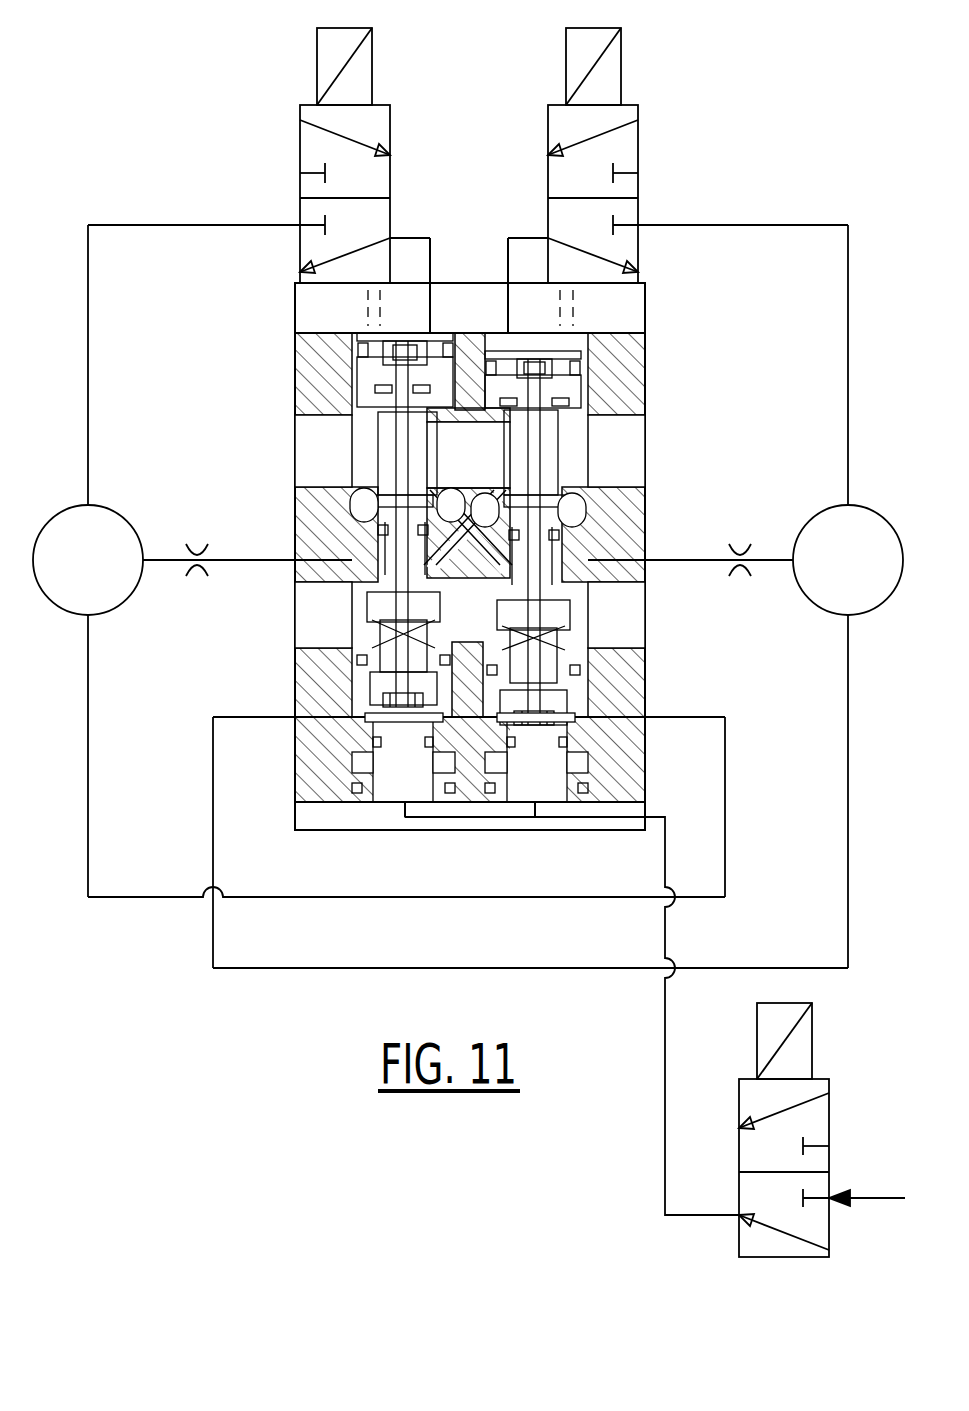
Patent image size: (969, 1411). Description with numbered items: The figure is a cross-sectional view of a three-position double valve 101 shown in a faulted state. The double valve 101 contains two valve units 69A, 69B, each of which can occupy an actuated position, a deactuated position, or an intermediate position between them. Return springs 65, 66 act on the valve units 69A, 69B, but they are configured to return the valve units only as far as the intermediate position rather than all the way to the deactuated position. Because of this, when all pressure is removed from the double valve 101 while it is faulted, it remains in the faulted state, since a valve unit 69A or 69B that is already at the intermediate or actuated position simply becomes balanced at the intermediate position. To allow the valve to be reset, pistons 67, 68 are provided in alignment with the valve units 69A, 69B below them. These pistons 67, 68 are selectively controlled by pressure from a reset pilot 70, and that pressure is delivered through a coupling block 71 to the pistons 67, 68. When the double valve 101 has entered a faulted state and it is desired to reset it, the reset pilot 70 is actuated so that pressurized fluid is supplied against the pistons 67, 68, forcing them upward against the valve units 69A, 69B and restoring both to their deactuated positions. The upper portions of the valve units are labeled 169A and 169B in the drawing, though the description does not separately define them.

The three-position double valve 101 is at (210, 118).
The first spool upper portion 169A is at (402, 368).
The second spool upper portion 169B is at (535, 388).
The valve unit 69A is at (388, 448).
The valve unit 69B is at (550, 448).
The return spring 65 is at (375, 645).
The return spring 66 is at (558, 645).
The piston 67 is at (385, 790).
The piston 68 is at (553, 790).
The coupling block 71 is at (445, 832).
The reset pilot 70 is at (739, 1236).